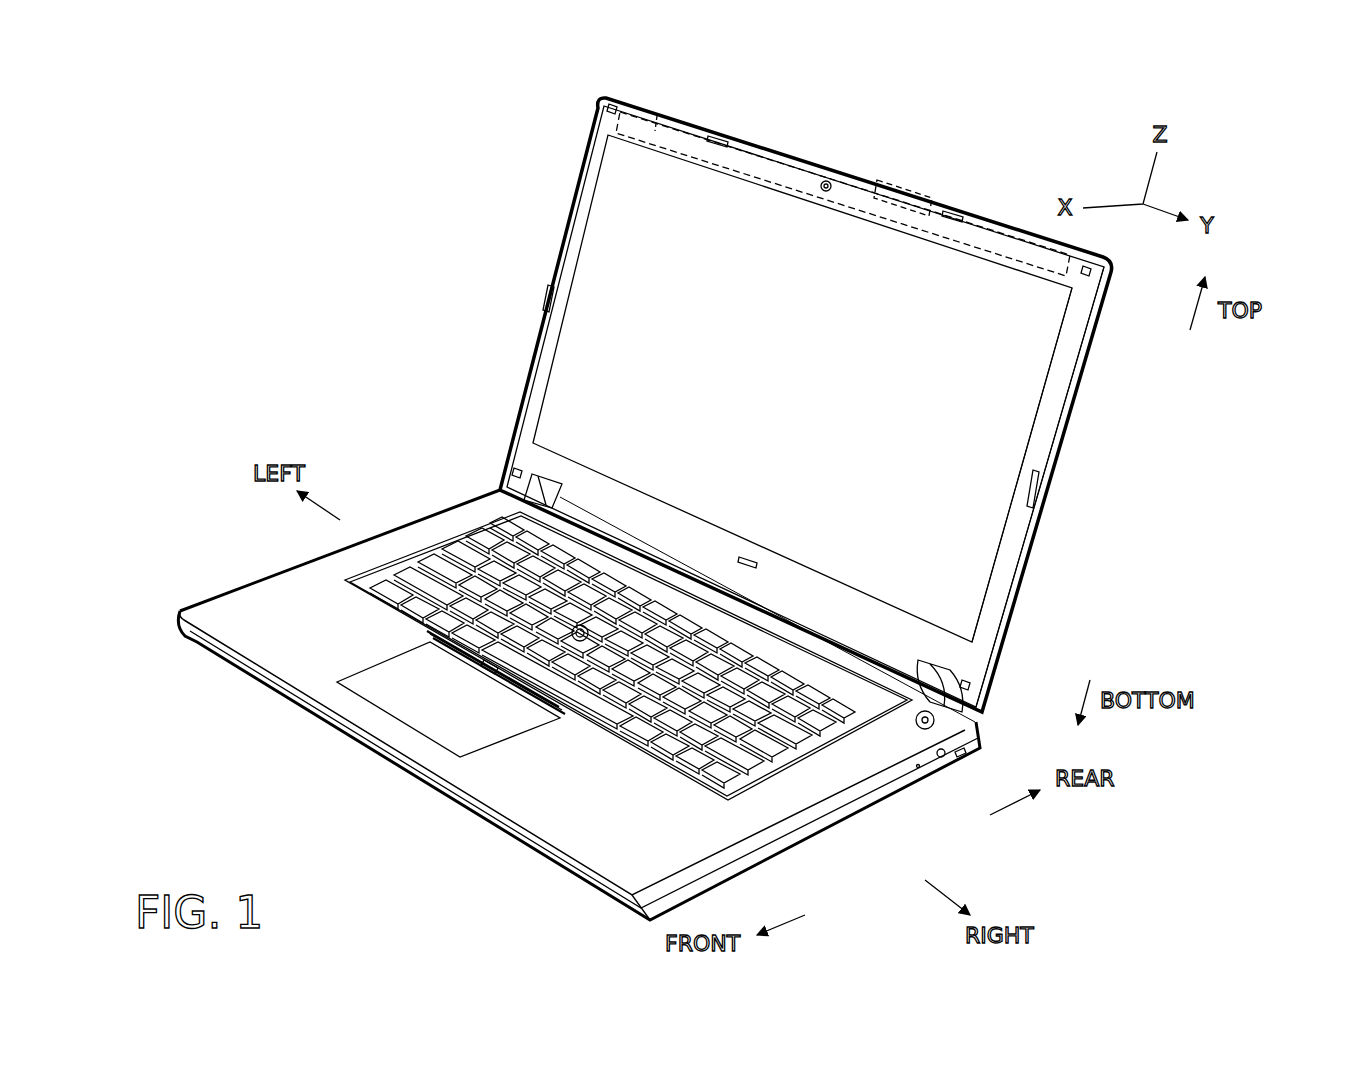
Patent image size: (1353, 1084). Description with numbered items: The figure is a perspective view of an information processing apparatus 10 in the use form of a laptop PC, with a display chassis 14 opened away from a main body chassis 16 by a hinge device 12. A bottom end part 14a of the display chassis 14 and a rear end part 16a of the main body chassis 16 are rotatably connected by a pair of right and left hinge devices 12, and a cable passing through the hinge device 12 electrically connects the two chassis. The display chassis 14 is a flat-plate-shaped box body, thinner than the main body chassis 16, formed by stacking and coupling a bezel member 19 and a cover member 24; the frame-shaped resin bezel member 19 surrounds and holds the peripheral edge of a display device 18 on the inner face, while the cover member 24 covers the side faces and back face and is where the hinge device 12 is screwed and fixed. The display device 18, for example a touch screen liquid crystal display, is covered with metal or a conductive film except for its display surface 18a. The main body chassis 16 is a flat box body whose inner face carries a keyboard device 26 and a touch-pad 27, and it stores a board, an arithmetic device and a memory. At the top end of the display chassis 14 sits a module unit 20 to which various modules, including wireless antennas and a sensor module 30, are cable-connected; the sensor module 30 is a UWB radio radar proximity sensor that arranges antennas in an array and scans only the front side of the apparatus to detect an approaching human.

The information processing apparatus 10 is at (331, 171).
The hinge device 12 is at (507, 493).
The display chassis 14 is at (945, 195).
The bottom end part of the display chassis 14a is at (495, 483).
The main body chassis 16 is at (490, 830).
The rear end part of the main body chassis 16a is at (470, 502).
The display device 18 is at (780, 225).
The display surface 18a is at (995, 445).
The bezel member 19 is at (845, 190).
The module unit 20 is at (665, 110).
The cover member 24 is at (1078, 392).
The keyboard device 26 is at (450, 555).
The touch-pad 27 is at (420, 710).
The sensor module 30 is at (890, 175).